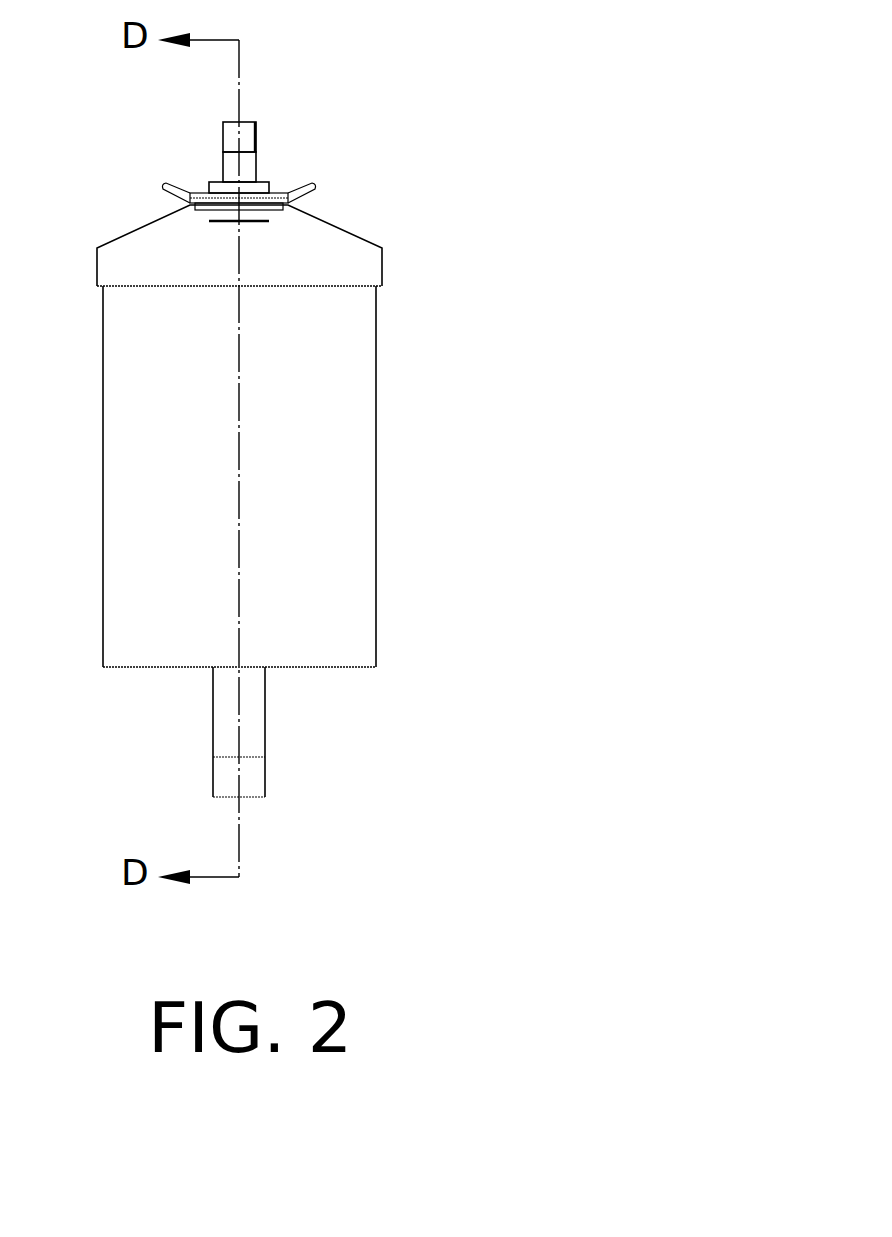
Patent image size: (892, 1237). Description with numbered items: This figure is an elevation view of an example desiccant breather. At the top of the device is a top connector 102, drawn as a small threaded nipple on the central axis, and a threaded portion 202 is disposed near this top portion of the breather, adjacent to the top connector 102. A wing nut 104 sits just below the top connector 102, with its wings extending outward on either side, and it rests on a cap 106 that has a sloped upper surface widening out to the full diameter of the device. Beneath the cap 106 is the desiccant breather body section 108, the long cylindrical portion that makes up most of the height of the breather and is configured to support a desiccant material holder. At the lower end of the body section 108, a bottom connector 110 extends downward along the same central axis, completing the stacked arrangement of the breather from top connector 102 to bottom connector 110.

The top connector 102 is at (362, 94).
The threaded portion 202 is at (413, 143).
The wing nut 104 is at (405, 176).
The cap 106 is at (289, 256).
The desiccant breather body section 108 is at (292, 476).
The bottom connector 110 is at (294, 758).